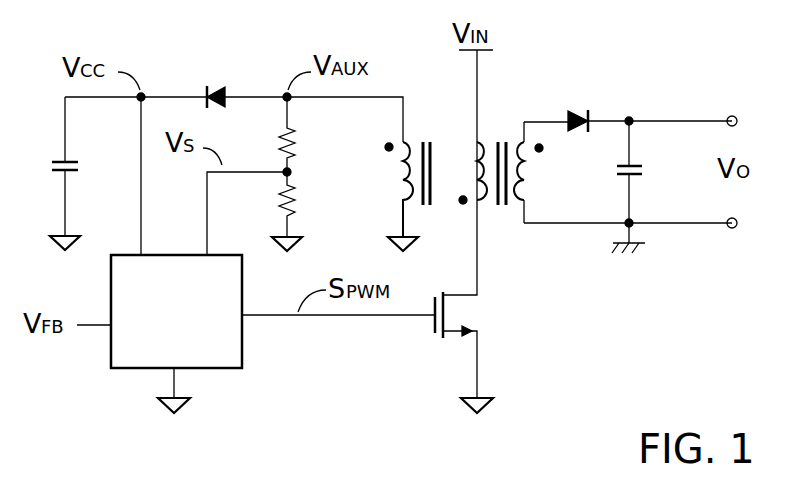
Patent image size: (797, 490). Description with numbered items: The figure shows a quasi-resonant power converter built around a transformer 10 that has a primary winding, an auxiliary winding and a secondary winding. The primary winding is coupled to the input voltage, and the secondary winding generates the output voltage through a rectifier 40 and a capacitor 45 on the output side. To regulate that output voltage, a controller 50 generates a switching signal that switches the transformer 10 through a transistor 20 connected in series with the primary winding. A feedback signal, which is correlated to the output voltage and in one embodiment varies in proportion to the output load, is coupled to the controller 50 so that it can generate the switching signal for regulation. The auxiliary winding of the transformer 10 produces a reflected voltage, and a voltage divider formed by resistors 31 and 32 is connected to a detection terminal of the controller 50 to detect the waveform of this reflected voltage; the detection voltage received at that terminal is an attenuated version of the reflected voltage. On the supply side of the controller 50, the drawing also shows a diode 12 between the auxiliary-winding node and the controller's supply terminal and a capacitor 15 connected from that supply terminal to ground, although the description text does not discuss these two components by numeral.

The transformer 10 is at (502, 122).
The diode 12 is at (216, 86).
The capacitor 15 is at (80, 164).
The transistor 20 is at (478, 318).
The resistor 31 is at (300, 138).
The resistor 32 is at (298, 202).
The rectifier 40 is at (577, 108).
The capacitor 45 is at (643, 168).
The controller 50 is at (244, 350).